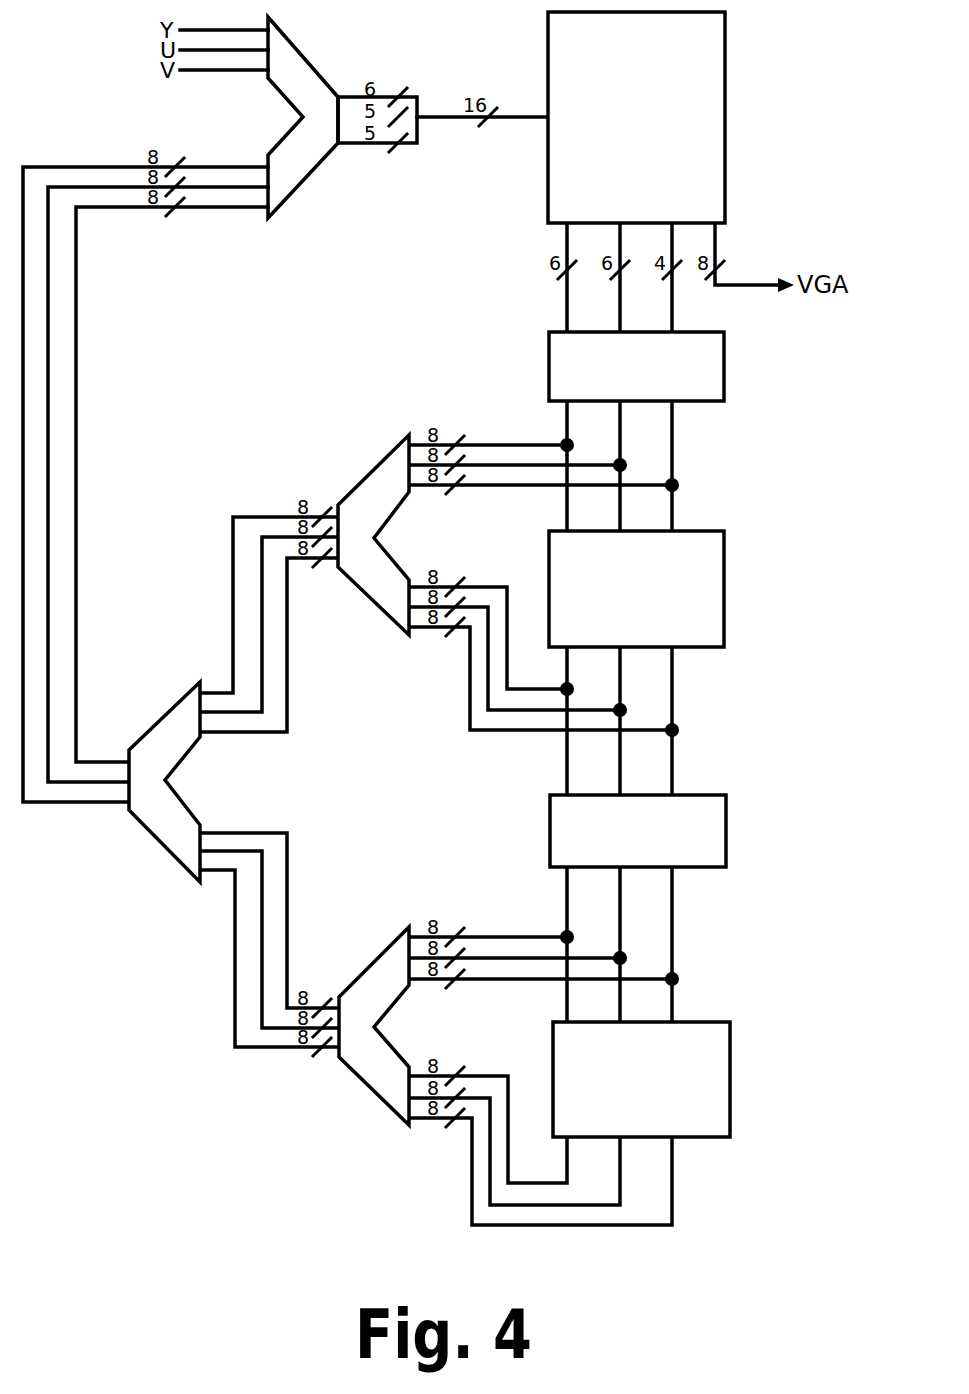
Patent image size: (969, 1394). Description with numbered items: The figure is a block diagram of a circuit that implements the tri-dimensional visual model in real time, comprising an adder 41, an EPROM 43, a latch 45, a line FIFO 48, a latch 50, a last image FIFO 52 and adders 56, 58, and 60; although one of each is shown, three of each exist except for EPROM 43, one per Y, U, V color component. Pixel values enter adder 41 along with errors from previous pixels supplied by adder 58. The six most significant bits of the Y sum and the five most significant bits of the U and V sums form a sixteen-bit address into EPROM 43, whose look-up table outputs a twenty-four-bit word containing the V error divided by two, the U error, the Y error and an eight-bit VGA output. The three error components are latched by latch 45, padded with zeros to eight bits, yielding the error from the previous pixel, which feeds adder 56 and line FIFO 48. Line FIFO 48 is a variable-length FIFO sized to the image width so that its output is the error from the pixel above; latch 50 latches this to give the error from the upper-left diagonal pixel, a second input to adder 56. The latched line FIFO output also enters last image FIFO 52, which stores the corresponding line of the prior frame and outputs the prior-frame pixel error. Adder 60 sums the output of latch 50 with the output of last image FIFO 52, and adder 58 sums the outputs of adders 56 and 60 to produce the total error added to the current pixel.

The adder 41 is at (317, 63).
The EPROM 43 is at (725, 138).
The latch 45 is at (724, 362).
The line FIFO 48 is at (724, 592).
The latch 50 is at (726, 828).
The last image FIFO 52 is at (730, 1080).
The adder 56 is at (372, 603).
The adder 58 is at (160, 843).
The adder 60 is at (360, 1078).